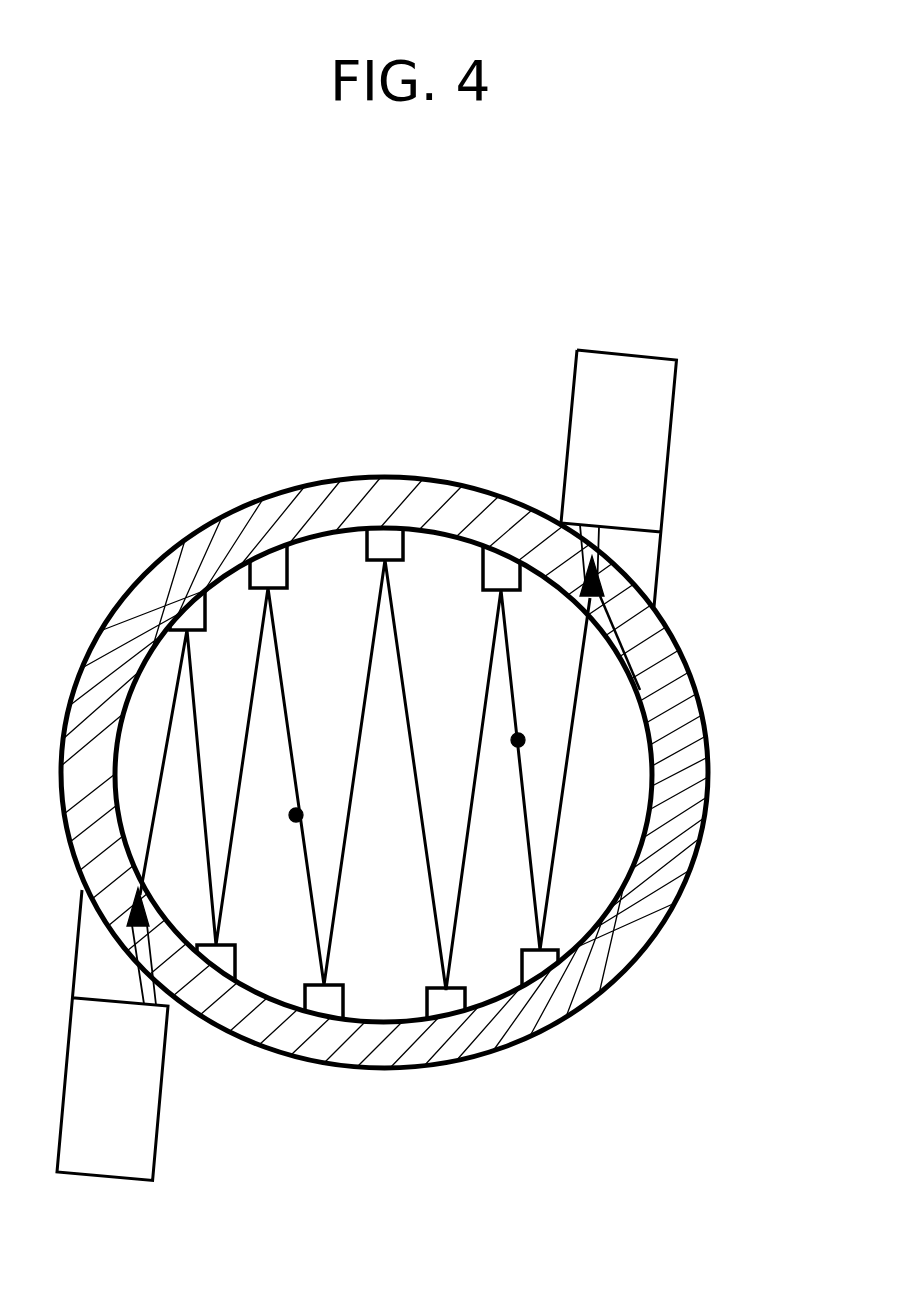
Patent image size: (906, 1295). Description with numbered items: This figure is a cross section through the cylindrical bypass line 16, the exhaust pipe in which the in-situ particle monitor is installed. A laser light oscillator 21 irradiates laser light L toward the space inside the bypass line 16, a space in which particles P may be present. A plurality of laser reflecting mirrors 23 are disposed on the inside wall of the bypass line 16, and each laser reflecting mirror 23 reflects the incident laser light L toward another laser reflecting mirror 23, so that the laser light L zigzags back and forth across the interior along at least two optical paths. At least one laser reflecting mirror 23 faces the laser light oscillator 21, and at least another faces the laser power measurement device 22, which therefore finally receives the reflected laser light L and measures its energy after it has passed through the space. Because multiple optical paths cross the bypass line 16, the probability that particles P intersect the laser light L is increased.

The bypass line 16 is at (703, 800).
The laser light oscillator 21 is at (163, 1140).
The laser power measurement device 22 is at (676, 428).
The laser reflecting mirror 23 is at (188, 598).
The laser light L is at (574, 734).
The particles P is at (294, 822).